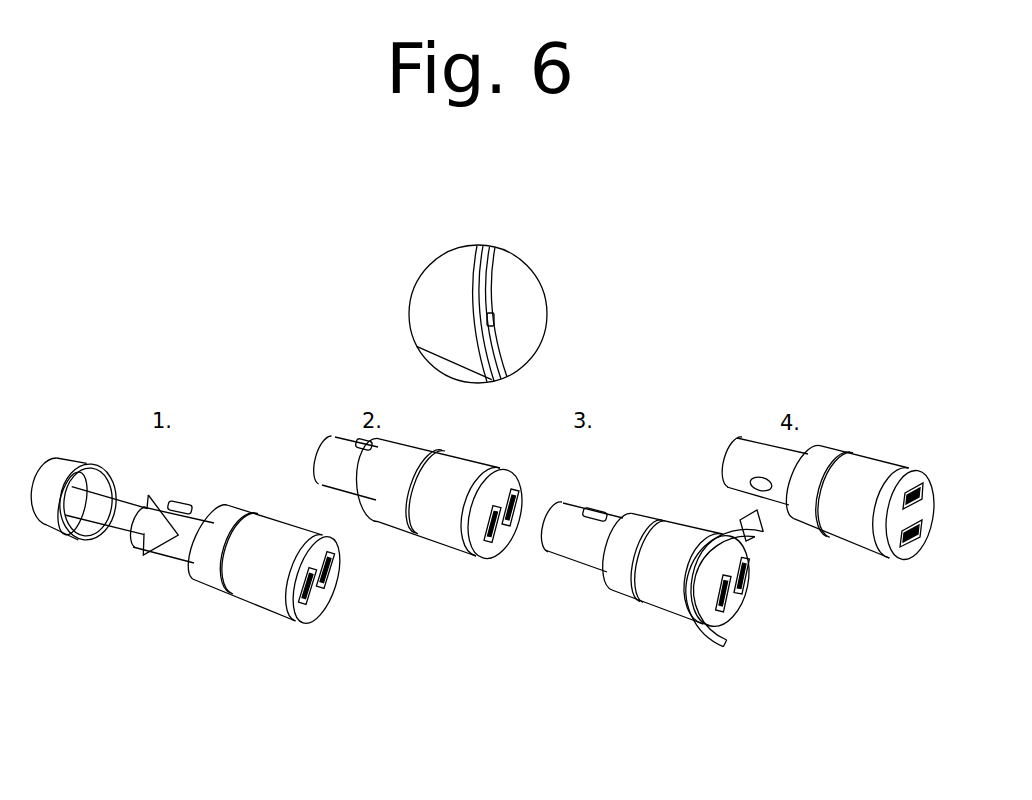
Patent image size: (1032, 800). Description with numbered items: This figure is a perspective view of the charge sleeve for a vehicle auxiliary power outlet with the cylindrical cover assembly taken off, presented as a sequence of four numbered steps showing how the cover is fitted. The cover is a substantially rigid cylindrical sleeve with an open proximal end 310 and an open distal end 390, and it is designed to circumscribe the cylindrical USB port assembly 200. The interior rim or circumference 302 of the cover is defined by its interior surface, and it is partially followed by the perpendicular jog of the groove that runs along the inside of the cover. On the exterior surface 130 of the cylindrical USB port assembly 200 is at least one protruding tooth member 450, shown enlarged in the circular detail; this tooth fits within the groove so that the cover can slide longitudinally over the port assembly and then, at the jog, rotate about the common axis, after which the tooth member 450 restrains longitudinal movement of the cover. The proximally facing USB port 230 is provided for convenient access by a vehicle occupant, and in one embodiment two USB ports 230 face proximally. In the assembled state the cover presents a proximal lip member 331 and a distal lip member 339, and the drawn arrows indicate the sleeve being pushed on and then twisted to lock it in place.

The protruding tooth member 450 is at (490, 307).
The open proximal end 310 is at (113, 499).
The open distal end 390 is at (103, 487).
The interior rim 302 is at (87, 532).
The exterior surface 130 is at (239, 594).
The USB port 230 is at (302, 613).
The cylindrical USB port assembly 200 is at (511, 572).
The distal lip member 339 is at (857, 452).
The proximal lip member 331 is at (913, 467).